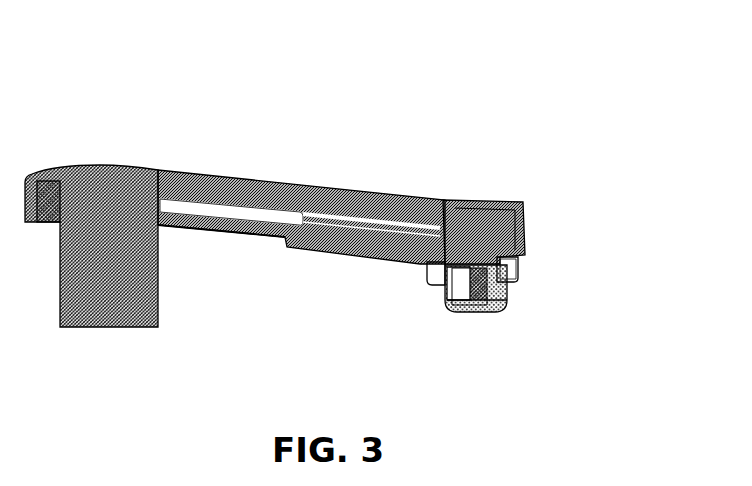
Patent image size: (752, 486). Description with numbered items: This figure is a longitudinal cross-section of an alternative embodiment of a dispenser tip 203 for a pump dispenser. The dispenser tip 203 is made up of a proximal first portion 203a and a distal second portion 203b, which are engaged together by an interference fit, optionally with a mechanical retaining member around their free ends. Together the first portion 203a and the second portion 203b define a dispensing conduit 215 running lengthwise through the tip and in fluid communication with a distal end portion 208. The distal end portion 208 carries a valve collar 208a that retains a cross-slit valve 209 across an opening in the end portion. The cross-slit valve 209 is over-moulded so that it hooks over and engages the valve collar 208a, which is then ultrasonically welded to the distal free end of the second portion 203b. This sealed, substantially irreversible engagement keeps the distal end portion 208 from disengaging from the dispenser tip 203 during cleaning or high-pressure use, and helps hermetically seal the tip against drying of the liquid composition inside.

The dispenser tip 203 is at (140, 101).
The proximal first portion 203a is at (98, 165).
The distal second portion 203b is at (467, 199).
The dispensing conduit 215 is at (260, 193).
The distal end portion 208 is at (513, 332).
The valve collar 208a is at (517, 262).
The cross-slit valve 209 is at (467, 292).